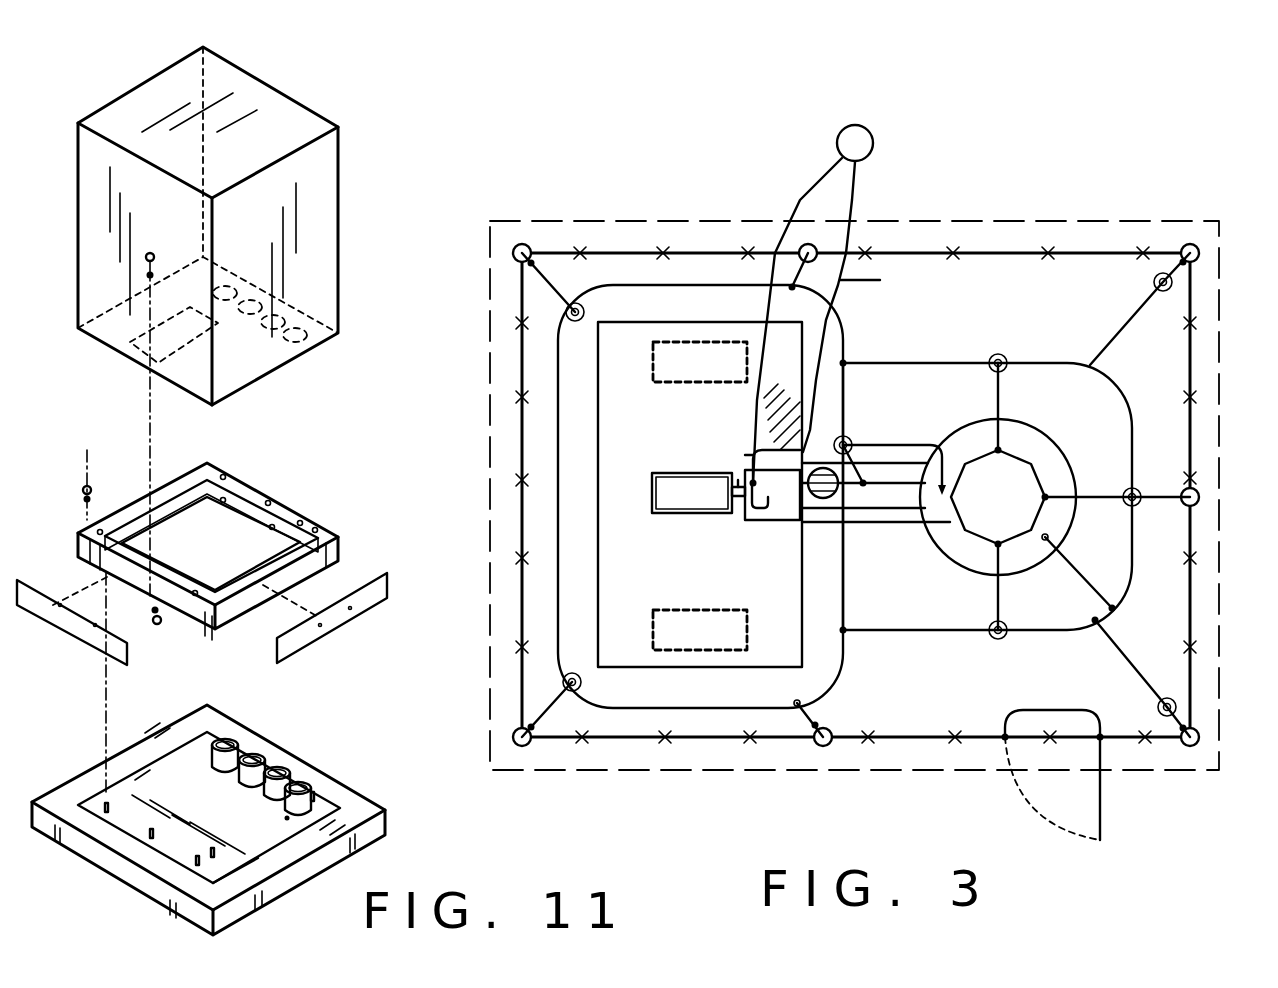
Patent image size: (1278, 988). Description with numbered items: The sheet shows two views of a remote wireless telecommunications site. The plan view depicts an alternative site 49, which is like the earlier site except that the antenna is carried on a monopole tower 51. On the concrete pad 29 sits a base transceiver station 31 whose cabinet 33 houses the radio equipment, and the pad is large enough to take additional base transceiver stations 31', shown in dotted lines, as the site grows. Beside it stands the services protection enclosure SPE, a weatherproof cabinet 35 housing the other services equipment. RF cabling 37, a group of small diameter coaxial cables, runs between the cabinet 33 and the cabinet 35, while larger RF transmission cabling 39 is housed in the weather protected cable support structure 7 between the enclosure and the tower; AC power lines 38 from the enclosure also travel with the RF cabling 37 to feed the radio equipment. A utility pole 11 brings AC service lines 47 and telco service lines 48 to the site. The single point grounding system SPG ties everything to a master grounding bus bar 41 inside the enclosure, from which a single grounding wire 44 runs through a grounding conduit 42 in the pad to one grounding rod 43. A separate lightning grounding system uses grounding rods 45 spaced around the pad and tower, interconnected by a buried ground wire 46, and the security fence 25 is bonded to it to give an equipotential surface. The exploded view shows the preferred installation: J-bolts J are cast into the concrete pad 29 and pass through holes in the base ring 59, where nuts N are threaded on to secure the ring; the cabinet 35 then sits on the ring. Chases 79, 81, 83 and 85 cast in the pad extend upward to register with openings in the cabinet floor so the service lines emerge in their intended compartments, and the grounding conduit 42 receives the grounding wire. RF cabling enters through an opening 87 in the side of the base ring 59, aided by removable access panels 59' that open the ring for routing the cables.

In FIG. 11, the weatherproof cabinet 35 is at (345, 215).
In FIG. 3, the weatherproof cabinet 35 is at (778, 530).
In FIG. 11, the nuts N is at (145, 256).
In FIG. 11, the base ring 59 is at (233, 551).
In FIG. 11, the opening 87 is at (322, 564).
In FIG. 11, the removable access panels 59' is at (213, 621).
In FIG. 11, the concrete pad 29 is at (290, 900).
In FIG. 3, the concrete pad 29 is at (550, 625).
In FIG. 11, the grounding conduit 42 is at (258, 865).
In FIG. 11, the chase 85 is at (233, 740).
In FIG. 11, the chase 83 is at (258, 757).
In FIG. 11, the chase 81 is at (283, 770).
In FIG. 11, the chase 79 is at (303, 786).
In FIG. 11, the J-bolts J is at (197, 862).
In FIG. 3, the alternative site 49 is at (1140, 188).
In FIG. 3, the security fence 25 is at (993, 253).
In FIG. 3, the ground wire 46 is at (1025, 363).
In FIG. 3, the monopole tower 51 is at (1068, 445).
In FIG. 3, the grounding rods 45 is at (565, 306).
In FIG. 3, the utility pole 11 is at (875, 140).
In FIG. 3, the telco service lines 48 is at (880, 280).
In FIG. 3, the base transceiver station 31 is at (676, 471).
In FIG. 3, the cabinet 33 is at (674, 513).
In FIG. 3, the RF cabling 37 is at (736, 497).
In FIG. 3, the AC power lines 38 is at (738, 485).
In FIG. 3, the grounding wire 44 is at (748, 452).
In FIG. 3, the additional base transceiver stations 31' is at (675, 505).
In FIG. 3, the AC service lines 47 is at (759, 378).
In FIG. 3, the grounding rod 43 is at (855, 442).
In FIG. 3, the master grounding bus bar 41 is at (767, 499).
In FIG. 3, the RF transmission cabling 39 is at (870, 553).
In FIG. 3, the cable support structure 7 is at (913, 570).
In FIG. 3, the single point grounding system SPG is at (856, 425).
In FIG. 3, the services protection enclosure SPE is at (800, 540).